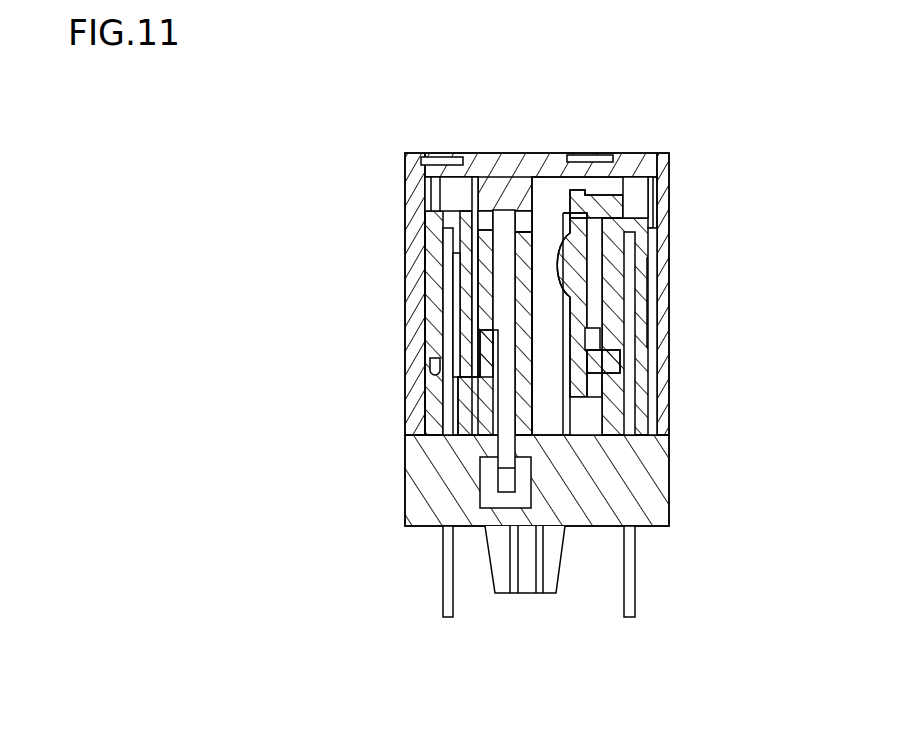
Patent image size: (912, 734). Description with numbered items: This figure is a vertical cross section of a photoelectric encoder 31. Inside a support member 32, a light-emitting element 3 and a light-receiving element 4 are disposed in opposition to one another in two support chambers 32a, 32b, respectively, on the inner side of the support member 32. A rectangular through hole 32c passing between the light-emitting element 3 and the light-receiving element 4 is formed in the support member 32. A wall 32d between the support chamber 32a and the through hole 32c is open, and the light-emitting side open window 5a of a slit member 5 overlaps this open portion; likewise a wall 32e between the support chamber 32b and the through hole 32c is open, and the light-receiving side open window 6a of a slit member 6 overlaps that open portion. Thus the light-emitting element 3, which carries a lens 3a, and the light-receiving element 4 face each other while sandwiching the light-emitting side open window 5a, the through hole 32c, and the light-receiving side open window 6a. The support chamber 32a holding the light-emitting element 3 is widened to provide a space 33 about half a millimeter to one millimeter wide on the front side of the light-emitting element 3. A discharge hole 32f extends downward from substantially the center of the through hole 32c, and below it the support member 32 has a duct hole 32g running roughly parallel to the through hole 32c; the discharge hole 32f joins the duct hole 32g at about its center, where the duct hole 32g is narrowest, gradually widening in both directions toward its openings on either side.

The photoelectric encoder 31 is at (712, 58).
The support member 32 is at (403, 153).
The support chamber 32a is at (638, 393).
The support chamber 32b is at (437, 417).
The through hole 32c is at (500, 211).
The wall 32d is at (520, 211).
The wall 32e is at (491, 210).
The discharge hole 32f is at (503, 422).
The duct hole 32g is at (487, 478).
The light-emitting element 3 is at (642, 238).
The lens 3a is at (560, 265).
The light-receiving element 4 is at (437, 222).
The slit member 5 is at (560, 373).
The light-emitting side open window 5a is at (587, 274).
The slit member 6 is at (477, 332).
The light-receiving side open window 6a is at (460, 272).
The space 33 is at (551, 422).